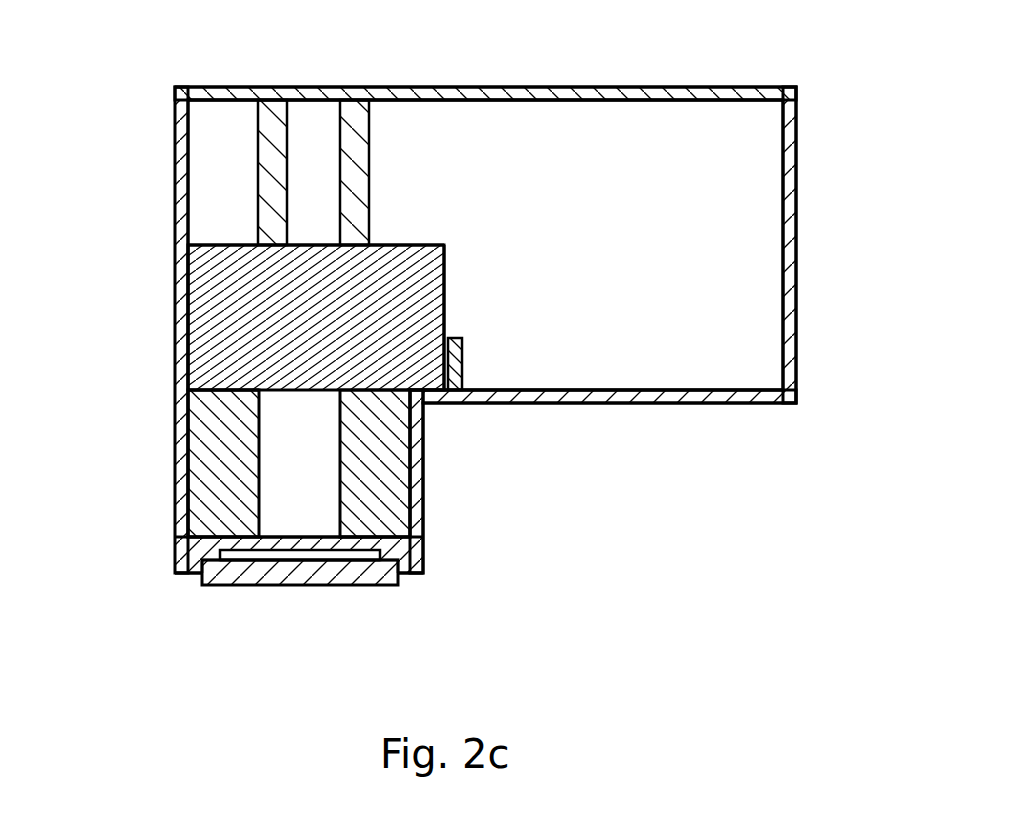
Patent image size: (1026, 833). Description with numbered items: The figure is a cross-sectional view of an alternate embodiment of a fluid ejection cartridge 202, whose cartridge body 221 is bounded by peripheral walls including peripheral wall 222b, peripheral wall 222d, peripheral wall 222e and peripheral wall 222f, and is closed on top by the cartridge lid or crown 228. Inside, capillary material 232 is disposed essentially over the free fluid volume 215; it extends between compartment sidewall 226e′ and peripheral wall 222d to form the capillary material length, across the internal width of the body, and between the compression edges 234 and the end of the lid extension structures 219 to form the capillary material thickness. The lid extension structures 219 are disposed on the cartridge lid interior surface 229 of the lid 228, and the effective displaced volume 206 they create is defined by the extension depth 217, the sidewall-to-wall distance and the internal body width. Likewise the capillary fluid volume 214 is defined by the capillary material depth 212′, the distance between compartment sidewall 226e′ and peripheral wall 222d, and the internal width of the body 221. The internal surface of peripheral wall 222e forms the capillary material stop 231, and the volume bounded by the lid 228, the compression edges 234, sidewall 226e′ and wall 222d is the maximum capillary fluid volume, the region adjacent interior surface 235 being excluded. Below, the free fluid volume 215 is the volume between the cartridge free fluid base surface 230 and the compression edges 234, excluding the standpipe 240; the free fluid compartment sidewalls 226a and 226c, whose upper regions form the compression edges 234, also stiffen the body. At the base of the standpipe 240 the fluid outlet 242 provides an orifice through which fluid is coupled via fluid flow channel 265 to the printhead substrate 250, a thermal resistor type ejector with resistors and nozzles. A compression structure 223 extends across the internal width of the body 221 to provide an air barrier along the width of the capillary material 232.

The fluid ejection cartridge 202 is at (783, 62).
The effective displaced volume 206 is at (320, 152).
The capillary material depth 212′ is at (458, 245).
The capillary fluid volume 214 is at (316, 317).
The free fluid volume 215 is at (145, 413).
The extension depth 217 is at (160, 245).
The lid extension structure 219 is at (385, 177).
The cartridge body 221 is at (808, 258).
The peripheral wall 222b is at (790, 137).
The peripheral wall 222d is at (180, 265).
The peripheral wall 222e is at (762, 400).
The peripheral wall 222f is at (425, 460).
The compression structure 223 is at (462, 343).
The free fluid compartment sidewall 226a is at (213, 417).
The free fluid compartment sidewall 226c is at (395, 490).
The compartment sidewall 226e′ is at (483, 378).
The cartridge lid 228 is at (487, 93).
The cartridge lid interior surface 229 is at (597, 103).
The cartridge free fluid base surface 230 is at (207, 537).
The capillary material stop 231 is at (740, 390).
The capillary material 232 is at (405, 302).
The compression edges 234 is at (400, 248).
The interior surface 235 is at (602, 390).
The standpipe 240 is at (299, 463).
The fluid outlet 242 is at (292, 543).
The printhead substrate 250 is at (270, 573).
The fluid flow channel 265 is at (308, 565).